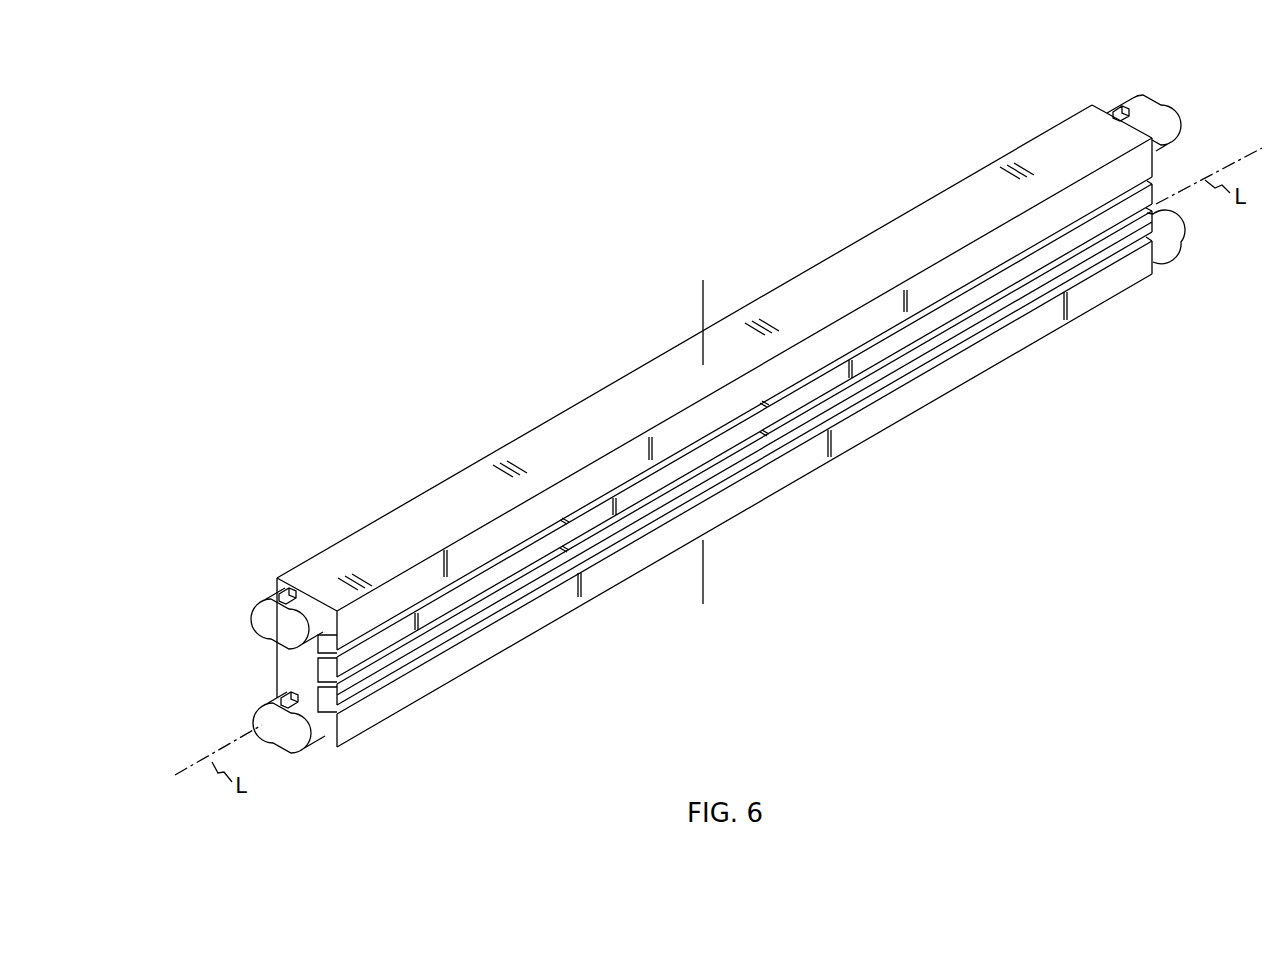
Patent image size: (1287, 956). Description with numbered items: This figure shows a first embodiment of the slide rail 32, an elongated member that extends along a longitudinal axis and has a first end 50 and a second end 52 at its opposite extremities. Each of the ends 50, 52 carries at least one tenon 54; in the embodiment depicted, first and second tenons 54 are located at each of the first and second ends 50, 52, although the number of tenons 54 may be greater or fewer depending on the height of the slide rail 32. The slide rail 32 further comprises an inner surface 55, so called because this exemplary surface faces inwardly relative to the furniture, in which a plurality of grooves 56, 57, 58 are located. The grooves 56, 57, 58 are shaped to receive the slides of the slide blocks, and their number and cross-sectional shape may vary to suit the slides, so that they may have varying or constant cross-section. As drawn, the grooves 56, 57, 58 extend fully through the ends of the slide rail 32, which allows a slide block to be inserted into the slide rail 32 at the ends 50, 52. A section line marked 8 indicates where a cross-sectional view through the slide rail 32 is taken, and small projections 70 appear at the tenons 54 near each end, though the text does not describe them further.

The slide rail 32 is at (918, 128).
The first end 50 is at (193, 681).
The second end 52 is at (1212, 142).
The tenon 54 is at (1168, 104).
The inner surface 55 is at (475, 655).
The groove 56 is at (566, 590).
The groove 57 is at (608, 530).
The groove 58 is at (795, 400).
The tab 70 is at (1110, 102).
The section line 8- 8 is at (690, 311).